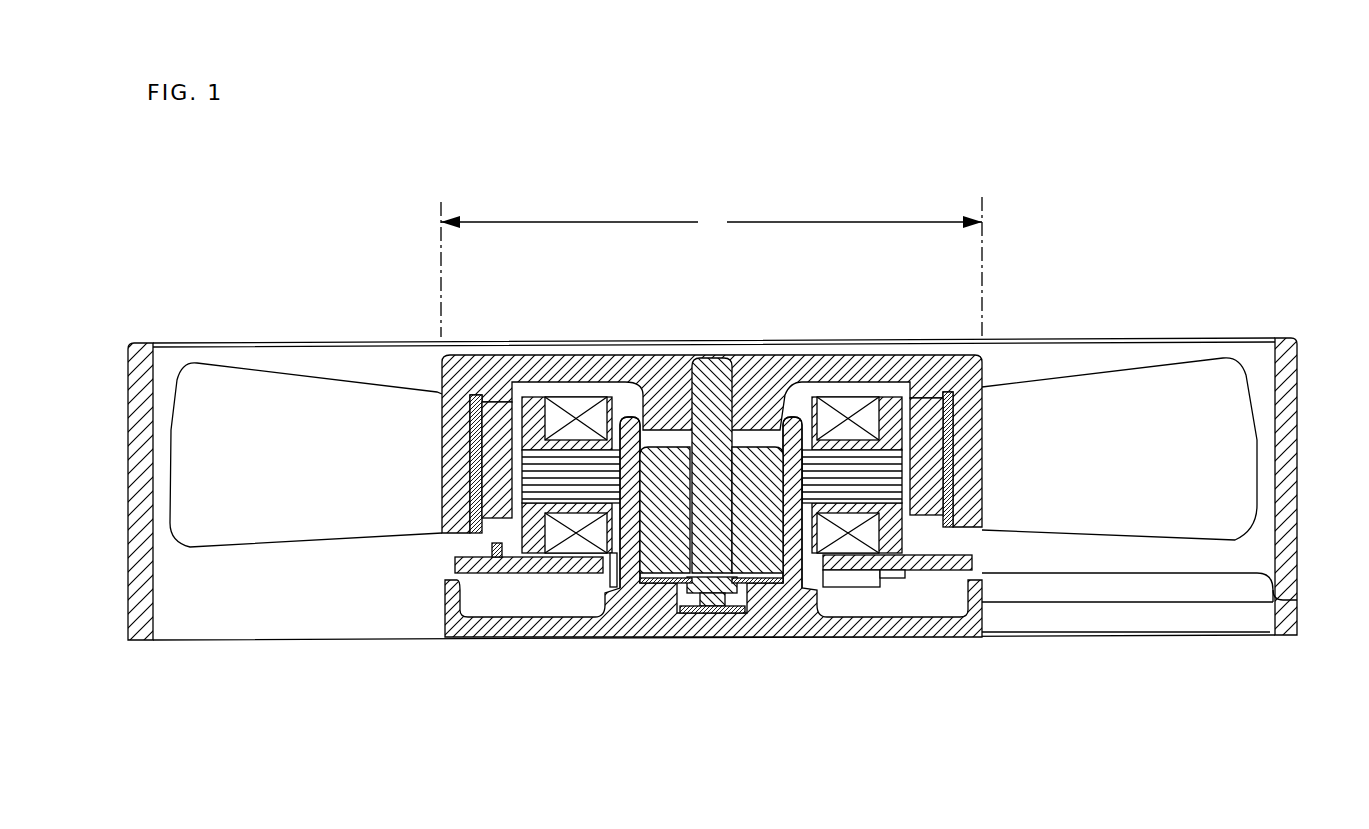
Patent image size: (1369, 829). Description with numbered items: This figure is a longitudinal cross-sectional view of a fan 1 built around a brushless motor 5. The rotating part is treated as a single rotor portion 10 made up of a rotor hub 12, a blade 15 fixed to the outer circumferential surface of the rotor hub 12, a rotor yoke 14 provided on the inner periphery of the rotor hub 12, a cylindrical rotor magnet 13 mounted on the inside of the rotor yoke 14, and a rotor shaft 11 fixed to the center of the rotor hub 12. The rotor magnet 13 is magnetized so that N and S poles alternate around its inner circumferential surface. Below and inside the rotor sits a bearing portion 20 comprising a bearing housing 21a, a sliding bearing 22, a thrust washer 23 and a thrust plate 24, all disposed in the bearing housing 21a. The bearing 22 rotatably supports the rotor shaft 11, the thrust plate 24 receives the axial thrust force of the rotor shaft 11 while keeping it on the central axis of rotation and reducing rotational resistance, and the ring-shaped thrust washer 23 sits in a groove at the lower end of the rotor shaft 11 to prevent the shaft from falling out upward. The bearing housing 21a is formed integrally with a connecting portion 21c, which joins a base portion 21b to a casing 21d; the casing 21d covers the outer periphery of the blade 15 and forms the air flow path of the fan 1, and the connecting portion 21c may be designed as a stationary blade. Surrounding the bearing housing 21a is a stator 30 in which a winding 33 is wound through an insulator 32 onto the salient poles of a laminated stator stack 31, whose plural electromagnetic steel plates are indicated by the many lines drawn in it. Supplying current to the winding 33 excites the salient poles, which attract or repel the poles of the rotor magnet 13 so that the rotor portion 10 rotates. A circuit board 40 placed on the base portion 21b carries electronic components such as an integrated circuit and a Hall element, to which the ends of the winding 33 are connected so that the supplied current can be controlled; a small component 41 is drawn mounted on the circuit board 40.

The fan 1 is at (342, 283).
The brushless motor 5 is at (711, 267).
The rotor portion 10 is at (737, 291).
The rotor shaft 11 is at (723, 393).
The rotor hub 12 is at (755, 375).
The rotor magnet 13 is at (925, 403).
The rotor yoke 14 is at (953, 405).
The blade 15 is at (1030, 393).
The bearing portion 20 is at (583, 720).
The bearing housing 21a is at (628, 575).
The base portion 21b is at (867, 625).
The connecting portion 21c is at (1140, 595).
The casing 21d is at (1310, 600).
The bearing 22 is at (665, 570).
The thrust washer 23 is at (680, 585).
The thrust plate 24 is at (733, 613).
The stator 30 is at (613, 291).
The stator stack 31 is at (533, 458).
The insulator 32 is at (530, 402).
The winding 33 is at (578, 408).
The circuit board 40 is at (935, 565).
The electronic component (sensor) 41 is at (498, 560).